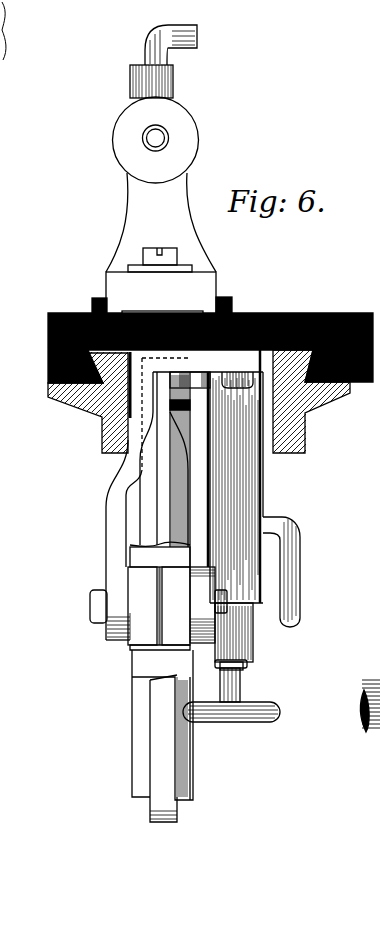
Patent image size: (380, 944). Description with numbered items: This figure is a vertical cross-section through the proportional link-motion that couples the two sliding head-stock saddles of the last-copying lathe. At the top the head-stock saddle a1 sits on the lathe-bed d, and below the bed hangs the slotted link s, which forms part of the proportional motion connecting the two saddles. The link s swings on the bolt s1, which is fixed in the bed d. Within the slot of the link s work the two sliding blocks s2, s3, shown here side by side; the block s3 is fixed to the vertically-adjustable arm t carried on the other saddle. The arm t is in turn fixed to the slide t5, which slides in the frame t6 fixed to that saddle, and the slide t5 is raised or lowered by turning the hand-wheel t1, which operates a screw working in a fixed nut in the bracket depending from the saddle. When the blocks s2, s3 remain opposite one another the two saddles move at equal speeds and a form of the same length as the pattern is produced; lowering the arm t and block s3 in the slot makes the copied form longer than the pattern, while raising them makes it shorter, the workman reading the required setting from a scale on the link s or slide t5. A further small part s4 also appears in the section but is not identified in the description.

The head-stock saddle a1 is at (194, 338).
The lathe-bed d is at (199, 401).
The slotted link s is at (170, 597).
The bolt s1 is at (108, 503).
The sliding block s2 is at (142, 606).
The sliding block s3 is at (174, 606).
The screw s4 is at (190, 392).
The vertically-adjustable arm t is at (208, 605).
The hand-wheel t1 is at (240, 691).
The slide t5 is at (246, 650).
The frame t6 is at (254, 488).